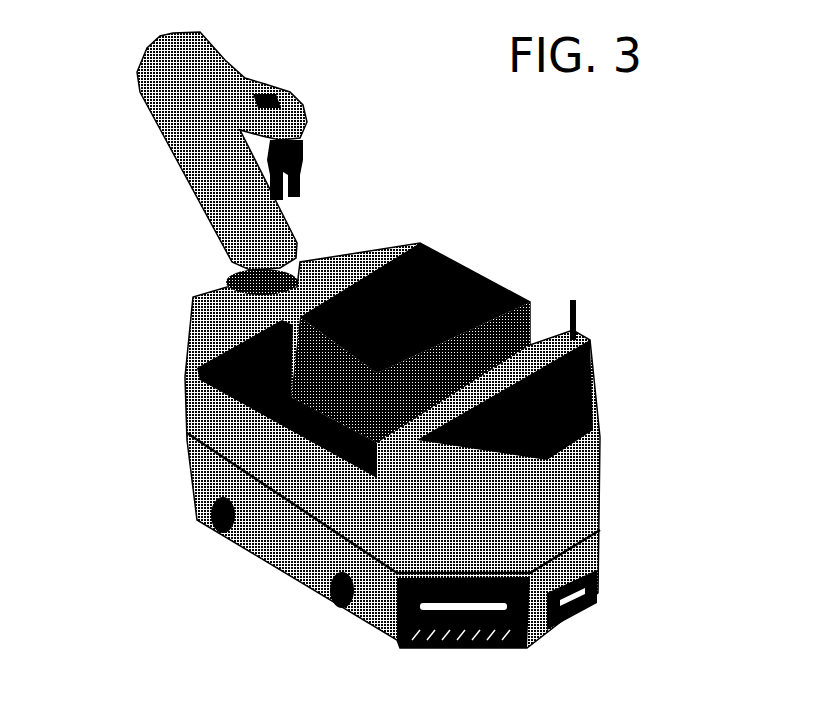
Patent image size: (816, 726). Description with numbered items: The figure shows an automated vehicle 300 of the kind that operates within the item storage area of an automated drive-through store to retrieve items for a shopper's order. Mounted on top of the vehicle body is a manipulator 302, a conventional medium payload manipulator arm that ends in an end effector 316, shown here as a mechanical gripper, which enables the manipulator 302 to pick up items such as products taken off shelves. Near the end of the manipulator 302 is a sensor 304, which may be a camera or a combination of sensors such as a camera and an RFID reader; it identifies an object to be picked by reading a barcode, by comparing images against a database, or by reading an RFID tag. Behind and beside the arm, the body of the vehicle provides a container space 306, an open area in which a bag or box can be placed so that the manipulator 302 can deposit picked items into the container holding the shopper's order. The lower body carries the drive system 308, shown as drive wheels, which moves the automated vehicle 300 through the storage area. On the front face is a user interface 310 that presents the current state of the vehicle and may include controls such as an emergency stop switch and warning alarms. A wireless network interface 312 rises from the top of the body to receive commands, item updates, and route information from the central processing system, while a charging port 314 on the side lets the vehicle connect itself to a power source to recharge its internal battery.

The automated vehicle 300 is at (606, 157).
The manipulator 302 is at (188, 55).
The sensor 304 is at (280, 98).
The container space 306 is at (213, 362).
The drive system 308 is at (212, 518).
The user interface 310 is at (427, 645).
The wireless network interface 312 is at (575, 312).
The charging port 314 is at (590, 607).
The end effector 316 is at (303, 163).